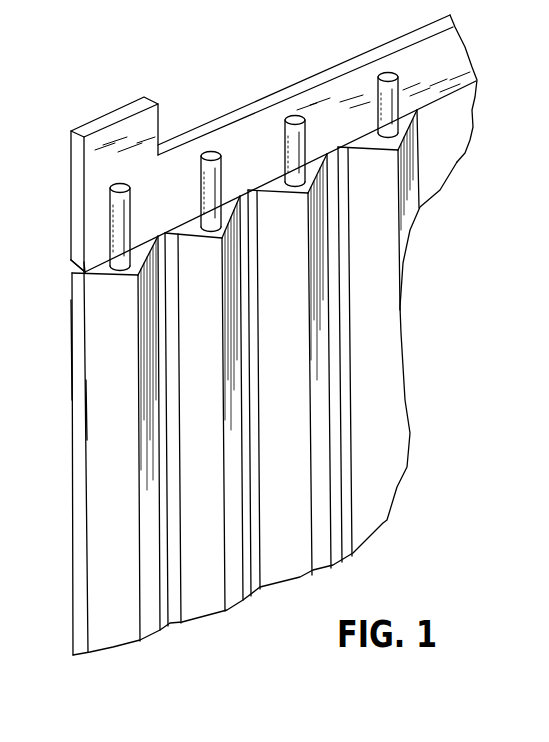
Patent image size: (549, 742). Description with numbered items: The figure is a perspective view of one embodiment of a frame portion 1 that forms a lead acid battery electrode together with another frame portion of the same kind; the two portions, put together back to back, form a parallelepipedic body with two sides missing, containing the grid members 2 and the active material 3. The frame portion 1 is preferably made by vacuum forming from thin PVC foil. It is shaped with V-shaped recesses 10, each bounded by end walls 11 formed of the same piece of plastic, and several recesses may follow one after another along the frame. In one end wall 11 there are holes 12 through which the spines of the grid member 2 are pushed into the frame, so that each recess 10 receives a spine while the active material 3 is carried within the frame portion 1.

The frame portion 1 is at (64, 350).
The grid member 2 is at (305, 130).
The active material 3 is at (108, 402).
The V-shaped recess 10 is at (255, 354).
The end wall 11 is at (86, 273).
The hole 12 is at (400, 130).